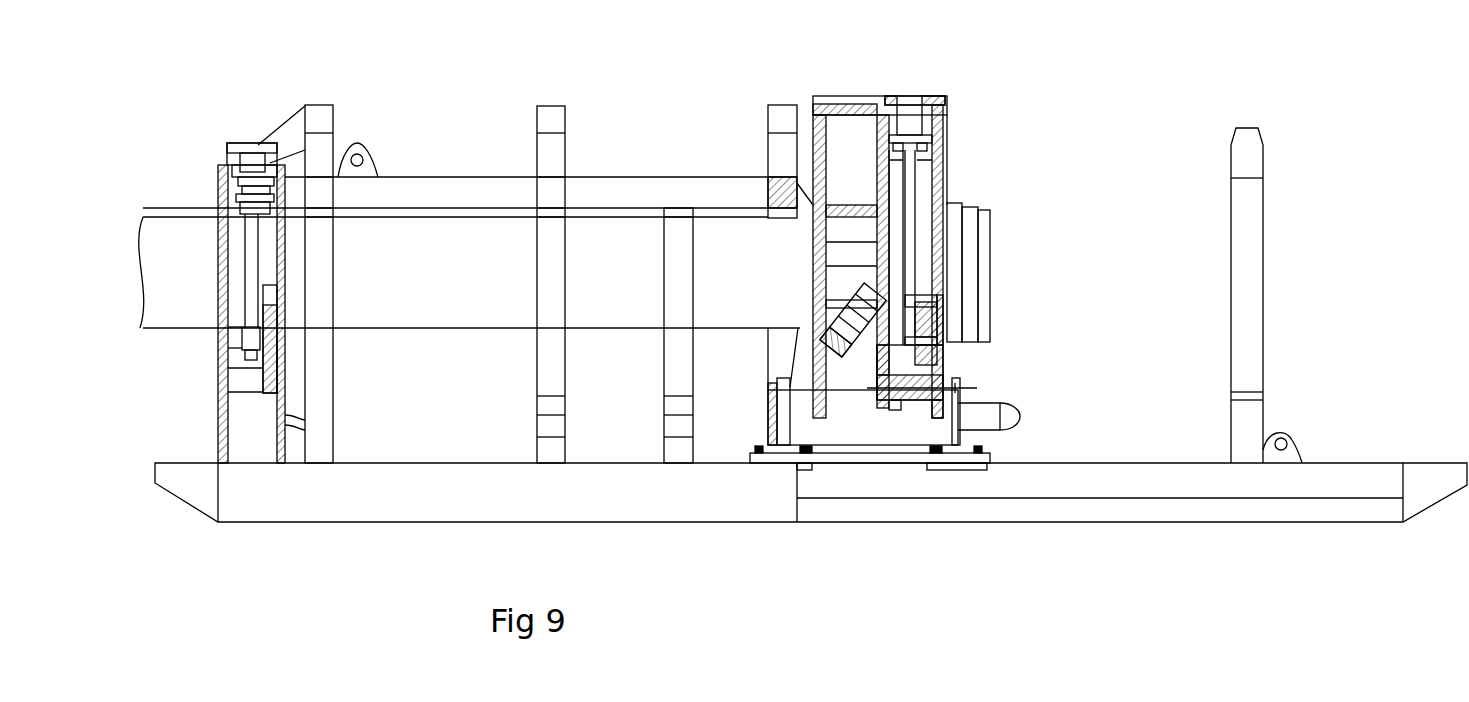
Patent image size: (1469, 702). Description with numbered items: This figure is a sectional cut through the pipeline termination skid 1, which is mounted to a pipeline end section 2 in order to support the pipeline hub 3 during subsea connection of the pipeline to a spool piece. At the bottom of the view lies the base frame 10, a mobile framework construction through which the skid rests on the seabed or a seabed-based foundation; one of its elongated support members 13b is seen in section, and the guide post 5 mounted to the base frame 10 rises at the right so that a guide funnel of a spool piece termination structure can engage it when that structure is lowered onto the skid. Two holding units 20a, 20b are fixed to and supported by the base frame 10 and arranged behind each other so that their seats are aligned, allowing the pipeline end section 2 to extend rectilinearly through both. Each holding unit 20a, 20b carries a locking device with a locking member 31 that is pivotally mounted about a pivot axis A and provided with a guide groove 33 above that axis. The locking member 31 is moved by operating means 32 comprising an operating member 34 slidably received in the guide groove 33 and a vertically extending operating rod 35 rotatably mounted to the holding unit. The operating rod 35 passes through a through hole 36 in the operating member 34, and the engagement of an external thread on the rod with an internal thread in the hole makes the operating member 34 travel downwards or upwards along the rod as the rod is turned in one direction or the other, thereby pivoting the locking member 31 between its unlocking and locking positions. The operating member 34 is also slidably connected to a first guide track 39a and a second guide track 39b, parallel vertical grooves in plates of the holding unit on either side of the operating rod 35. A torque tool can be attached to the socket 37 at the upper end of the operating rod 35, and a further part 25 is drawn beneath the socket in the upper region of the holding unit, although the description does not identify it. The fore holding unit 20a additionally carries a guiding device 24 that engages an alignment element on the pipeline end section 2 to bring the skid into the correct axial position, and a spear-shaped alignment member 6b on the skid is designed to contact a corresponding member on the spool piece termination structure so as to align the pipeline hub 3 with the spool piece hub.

The pipeline termination skid 1 is at (616, 103).
The pipeline end section 2 is at (433, 318).
The pipeline hub 3 is at (988, 216).
The guide post 5 is at (1255, 250).
The alignment member 6b is at (1003, 424).
The base frame 10 is at (358, 542).
The support member 13b is at (1086, 518).
The holding unit 20a is at (823, 97).
The holding unit 20b is at (220, 170).
The guiding device 24 is at (880, 313).
The nut 25 is at (938, 158).
The locking member 31 is at (270, 318).
The operating means 32 is at (250, 140).
The guide groove 33 is at (925, 337).
The operating member 34 is at (232, 340).
The operating rod 35 is at (258, 243).
The through hole 36 is at (905, 350).
The socket 37 is at (256, 158).
The first guide track 39a is at (935, 315).
The second guide track 39b is at (852, 315).
The pivot axis A is at (985, 388).